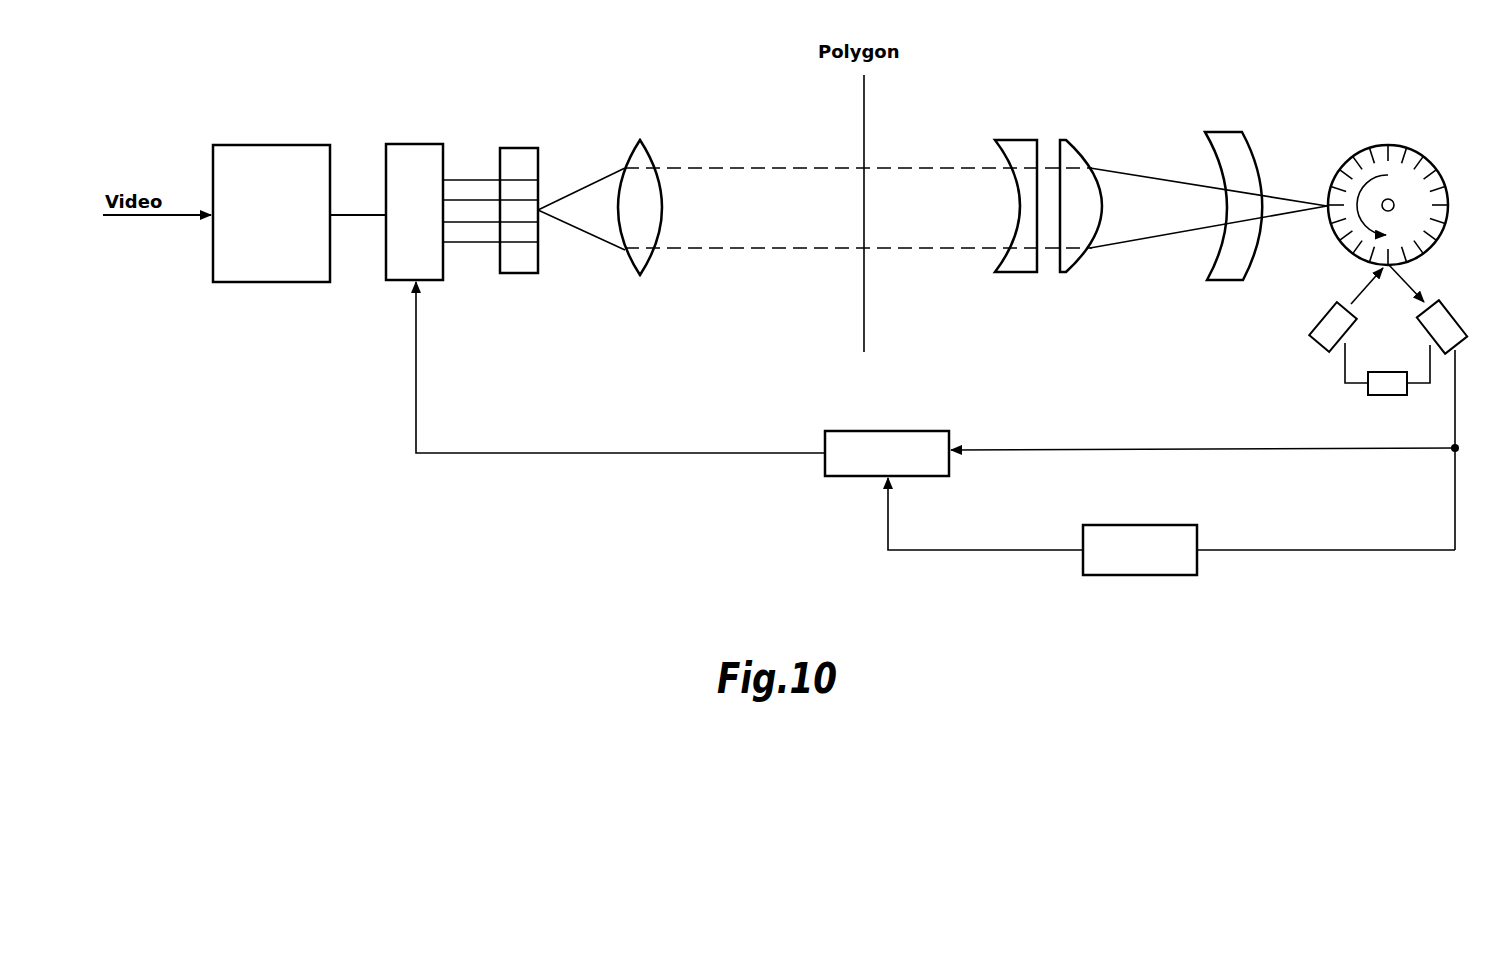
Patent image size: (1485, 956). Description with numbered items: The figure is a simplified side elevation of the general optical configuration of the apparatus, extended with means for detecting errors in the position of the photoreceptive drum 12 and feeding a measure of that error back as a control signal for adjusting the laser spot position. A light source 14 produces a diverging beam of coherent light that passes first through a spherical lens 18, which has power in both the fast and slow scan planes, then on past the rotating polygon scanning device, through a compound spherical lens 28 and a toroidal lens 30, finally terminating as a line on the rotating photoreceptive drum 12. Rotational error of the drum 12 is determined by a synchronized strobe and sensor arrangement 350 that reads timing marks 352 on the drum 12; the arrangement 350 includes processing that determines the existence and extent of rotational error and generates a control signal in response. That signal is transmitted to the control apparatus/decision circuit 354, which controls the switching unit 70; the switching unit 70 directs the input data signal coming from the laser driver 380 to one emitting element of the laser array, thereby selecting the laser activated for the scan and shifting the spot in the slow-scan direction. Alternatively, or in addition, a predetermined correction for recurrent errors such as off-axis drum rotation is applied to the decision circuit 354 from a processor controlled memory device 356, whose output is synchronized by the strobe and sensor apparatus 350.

The laser driver 380 is at (278, 145).
The switching unit 70 is at (413, 144).
The light source 14 is at (525, 148).
The spherical lens 18 is at (640, 140).
The compound spherical lens 28 is at (1076, 120).
The toroidal lens 30 is at (1230, 132).
The photoreceptive drum 12 is at (1358, 156).
The timing marks 352 is at (1406, 150).
The synchronized strobe and sensor arrangement 350 is at (1290, 290).
The control apparatus/decision circuit 354 is at (897, 431).
The processor controlled memory device 356 is at (1145, 525).